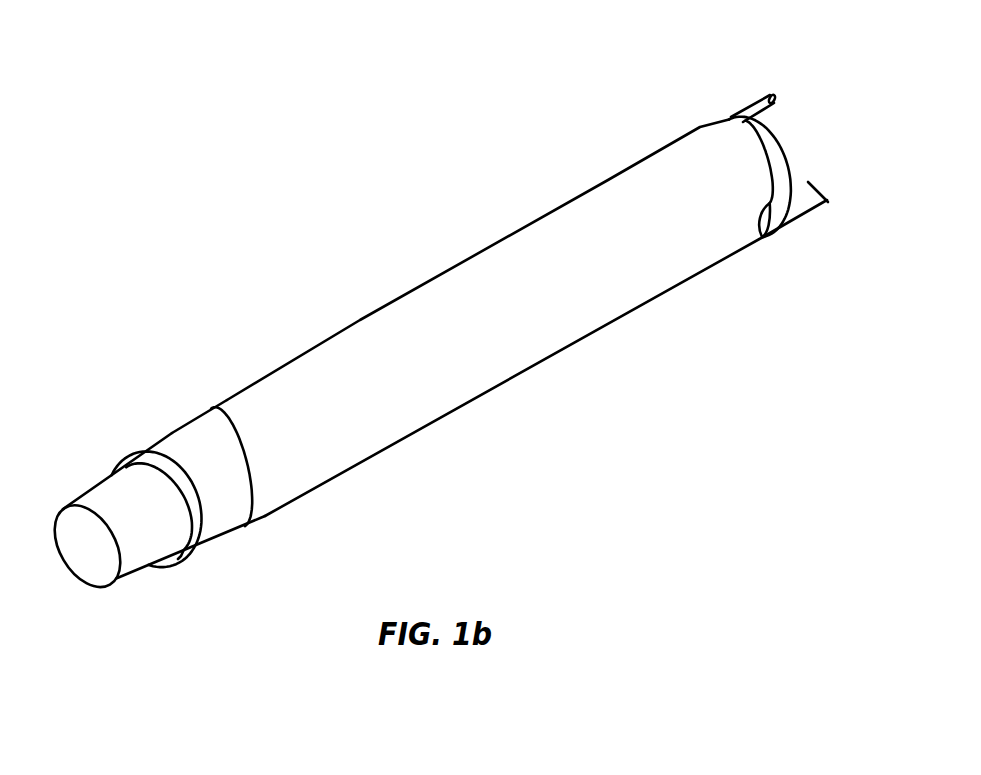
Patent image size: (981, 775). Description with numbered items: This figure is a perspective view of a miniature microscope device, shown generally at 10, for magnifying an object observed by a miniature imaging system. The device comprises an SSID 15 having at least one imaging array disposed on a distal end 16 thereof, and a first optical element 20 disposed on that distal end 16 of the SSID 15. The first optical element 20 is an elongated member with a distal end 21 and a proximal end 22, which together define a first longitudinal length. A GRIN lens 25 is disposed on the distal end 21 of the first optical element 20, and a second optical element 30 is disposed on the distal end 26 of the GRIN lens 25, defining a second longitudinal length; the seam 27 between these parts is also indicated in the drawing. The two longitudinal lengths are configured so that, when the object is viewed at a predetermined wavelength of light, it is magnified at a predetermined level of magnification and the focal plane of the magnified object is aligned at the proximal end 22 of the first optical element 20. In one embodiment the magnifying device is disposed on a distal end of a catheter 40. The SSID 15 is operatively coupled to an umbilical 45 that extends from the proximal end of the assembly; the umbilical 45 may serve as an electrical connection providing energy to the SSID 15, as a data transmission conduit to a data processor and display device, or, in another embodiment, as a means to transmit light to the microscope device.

The device for magnifying an object 10 is at (450, 335).
The SSID 15 is at (742, 122).
The distal end of the SSID 16 is at (764, 240).
The first optical element 20 is at (457, 392).
The distal end of the first optical element 21 is at (263, 520).
The proximal end of the first optical element 22 is at (707, 142).
The GRIN lens 25 is at (167, 442).
The distal end of the GRIN lens 26 is at (185, 553).
The cap-tube junction 27 is at (222, 418).
The second optical element 30 is at (138, 542).
The catheter 40 is at (822, 199).
The umbilical 45 is at (757, 100).